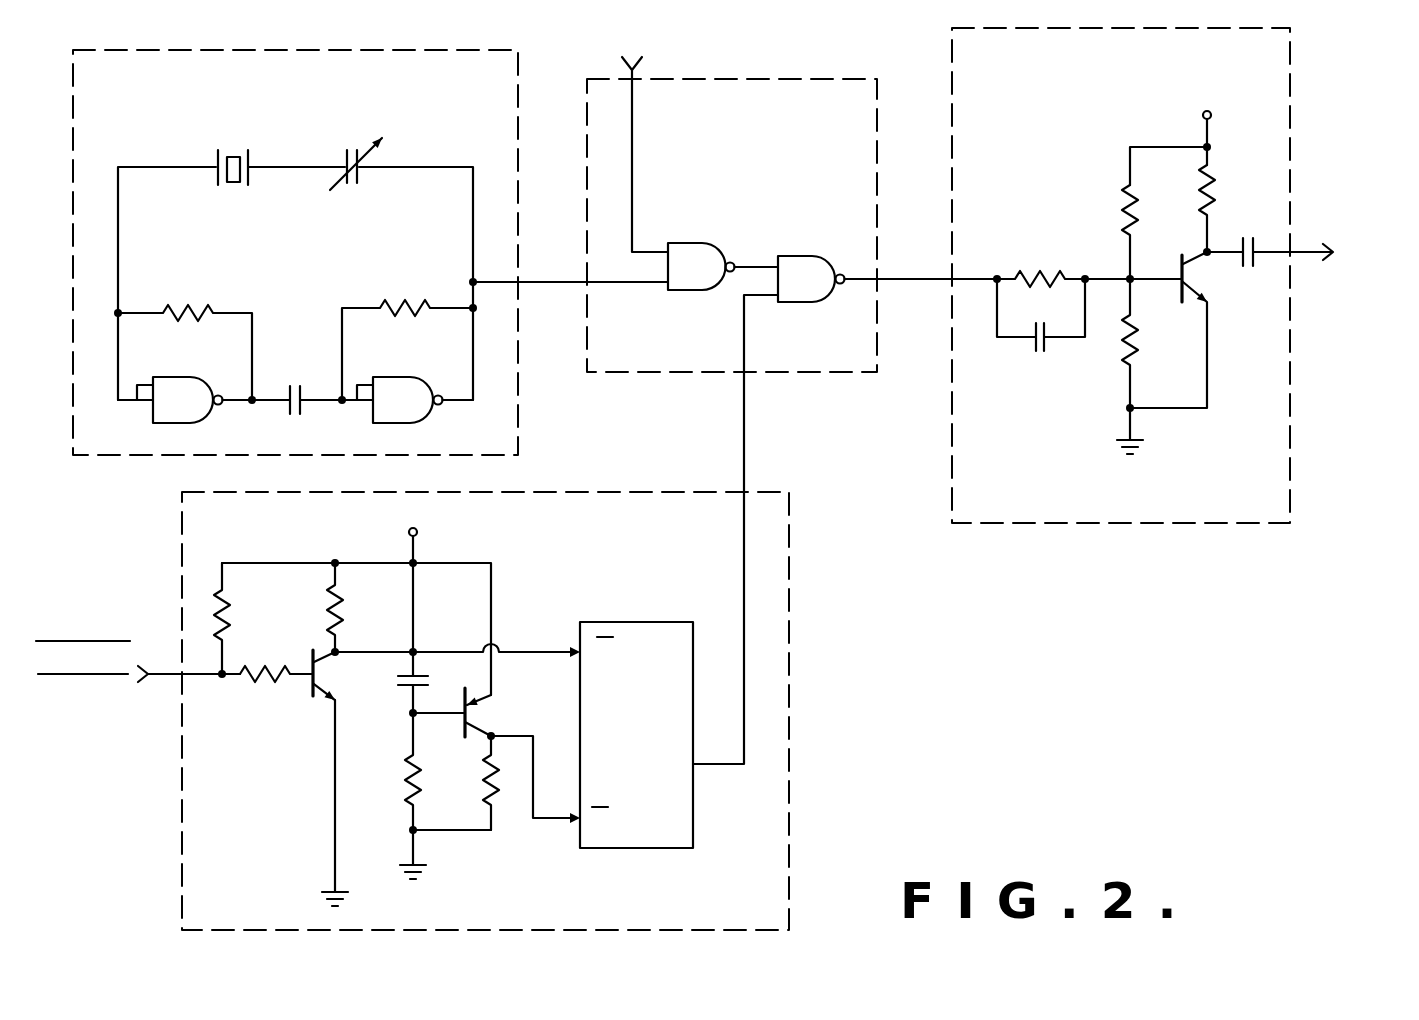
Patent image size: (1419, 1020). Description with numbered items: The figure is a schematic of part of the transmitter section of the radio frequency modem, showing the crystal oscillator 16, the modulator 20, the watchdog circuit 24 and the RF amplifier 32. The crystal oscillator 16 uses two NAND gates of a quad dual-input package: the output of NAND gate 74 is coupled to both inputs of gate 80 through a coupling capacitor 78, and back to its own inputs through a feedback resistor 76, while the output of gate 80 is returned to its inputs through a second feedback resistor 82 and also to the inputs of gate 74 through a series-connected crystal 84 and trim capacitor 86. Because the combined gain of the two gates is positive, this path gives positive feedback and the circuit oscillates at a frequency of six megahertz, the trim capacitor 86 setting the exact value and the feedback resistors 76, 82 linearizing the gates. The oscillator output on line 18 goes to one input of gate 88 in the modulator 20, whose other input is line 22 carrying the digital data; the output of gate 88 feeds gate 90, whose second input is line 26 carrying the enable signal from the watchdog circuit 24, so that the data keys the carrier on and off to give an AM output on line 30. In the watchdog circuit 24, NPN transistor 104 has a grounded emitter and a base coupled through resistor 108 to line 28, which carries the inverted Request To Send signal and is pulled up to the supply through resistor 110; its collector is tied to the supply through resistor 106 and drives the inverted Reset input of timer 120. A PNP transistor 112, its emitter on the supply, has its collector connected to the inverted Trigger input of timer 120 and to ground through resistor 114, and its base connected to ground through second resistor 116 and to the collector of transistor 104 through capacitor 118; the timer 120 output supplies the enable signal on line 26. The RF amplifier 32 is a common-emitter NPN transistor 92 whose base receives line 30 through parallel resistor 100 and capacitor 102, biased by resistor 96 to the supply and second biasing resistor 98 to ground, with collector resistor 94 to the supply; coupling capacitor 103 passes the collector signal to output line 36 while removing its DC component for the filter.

The crystal oscillator 16 is at (376, 50).
The line 18 is at (553, 280).
The modulator 20 is at (770, 78).
The line 22 is at (632, 122).
The watchdog circuit 24 is at (791, 714).
The line 26 is at (742, 428).
The line 28 is at (161, 679).
The line 30 is at (912, 279).
The RF amplifier 32 is at (1122, 525).
The output line 36 is at (1305, 250).
The NAND gate 74 is at (186, 378).
The feedback resistor 76 is at (193, 310).
The coupling capacitor 78 is at (302, 385).
The NAND gate 80 is at (404, 378).
The second feedback resistor 82 is at (398, 302).
The crystal 84 is at (172, 150).
The trim capacitor 86 is at (355, 143).
The gate 88 is at (703, 243).
The gate 90 is at (810, 256).
The NPN transistor 92 is at (1205, 282).
The resistor 94 is at (1212, 192).
The biasing resistor 96 is at (1125, 200).
The second biasing resistor 98 is at (1124, 350).
The resistor 100 is at (1030, 272).
The capacitor 102 is at (1043, 353).
The coupling capacitor 103 is at (1245, 240).
The NPN transistor 104 is at (318, 702).
The resistor 106 is at (343, 598).
The resistor 108 is at (266, 686).
The resistor 110 is at (230, 598).
The PNP transistor 112 is at (482, 708).
The resistor 114 is at (485, 782).
The second resistor 116 is at (407, 784).
The capacitor 118 is at (398, 682).
The timer 120 is at (640, 622).